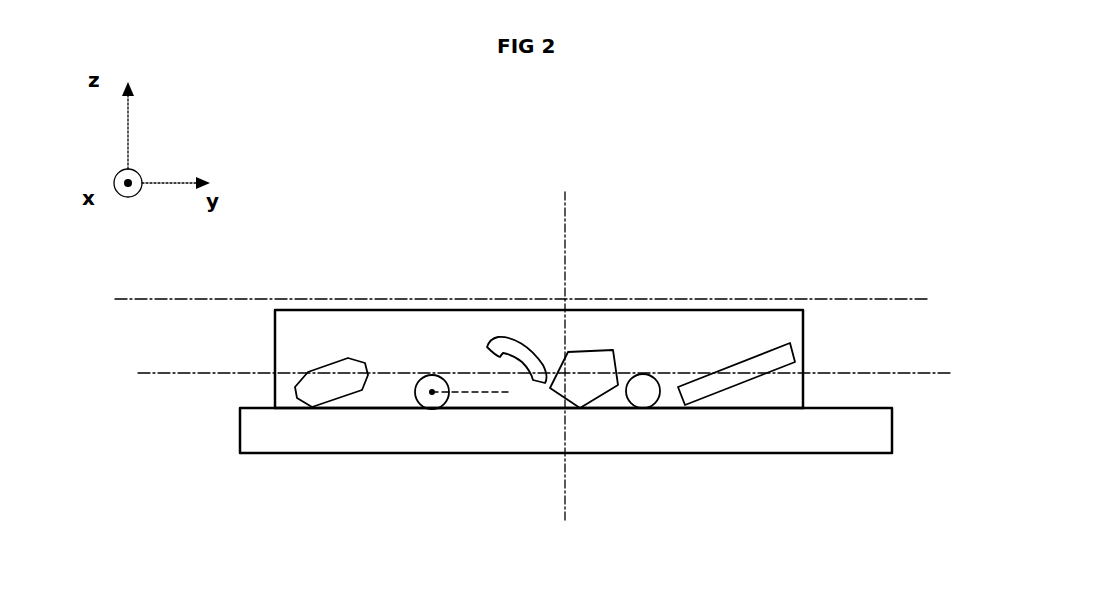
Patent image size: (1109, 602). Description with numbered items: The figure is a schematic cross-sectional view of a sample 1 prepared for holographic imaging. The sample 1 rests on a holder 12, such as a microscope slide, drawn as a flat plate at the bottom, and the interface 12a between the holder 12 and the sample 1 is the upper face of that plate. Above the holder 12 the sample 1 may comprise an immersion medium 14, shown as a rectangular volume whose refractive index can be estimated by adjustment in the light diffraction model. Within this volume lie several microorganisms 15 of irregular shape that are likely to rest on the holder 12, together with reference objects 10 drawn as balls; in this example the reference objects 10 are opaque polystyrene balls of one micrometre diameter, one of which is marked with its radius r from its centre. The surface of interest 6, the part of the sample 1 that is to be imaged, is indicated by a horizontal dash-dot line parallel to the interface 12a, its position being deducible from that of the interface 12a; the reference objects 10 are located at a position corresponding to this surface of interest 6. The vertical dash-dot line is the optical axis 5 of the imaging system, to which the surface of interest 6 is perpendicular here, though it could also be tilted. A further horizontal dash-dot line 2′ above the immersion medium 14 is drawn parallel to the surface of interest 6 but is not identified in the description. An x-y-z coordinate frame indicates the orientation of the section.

The sample 1 is at (837, 283).
The reference axis 2' is at (497, 323).
The optical axis 5 is at (566, 213).
The surface of interest 6 is at (178, 375).
The reference object 10 is at (643, 375).
The holder 12 is at (892, 428).
The interface 12a is at (288, 407).
The immersion medium 14 is at (772, 315).
The microorganisms 15 is at (348, 358).